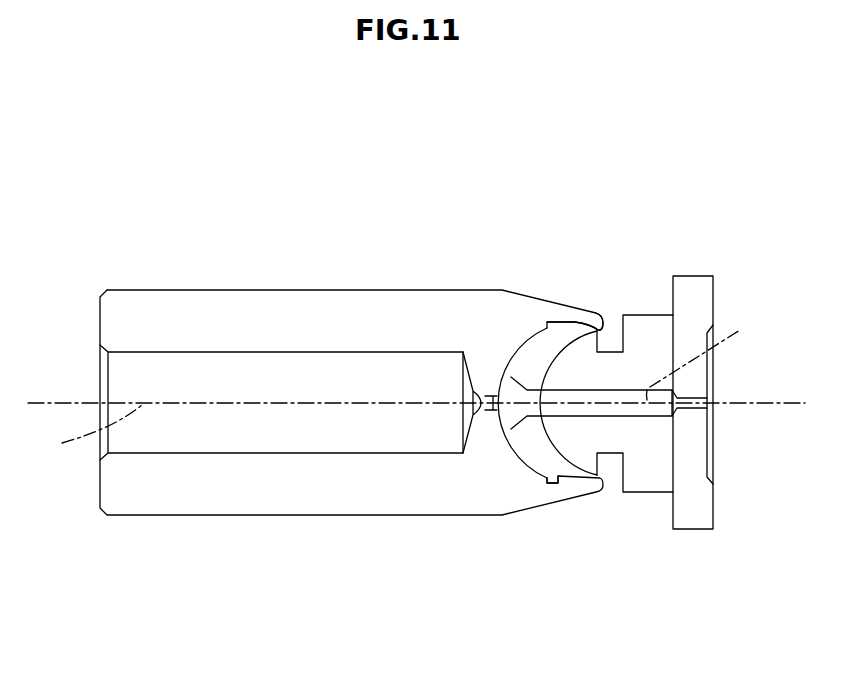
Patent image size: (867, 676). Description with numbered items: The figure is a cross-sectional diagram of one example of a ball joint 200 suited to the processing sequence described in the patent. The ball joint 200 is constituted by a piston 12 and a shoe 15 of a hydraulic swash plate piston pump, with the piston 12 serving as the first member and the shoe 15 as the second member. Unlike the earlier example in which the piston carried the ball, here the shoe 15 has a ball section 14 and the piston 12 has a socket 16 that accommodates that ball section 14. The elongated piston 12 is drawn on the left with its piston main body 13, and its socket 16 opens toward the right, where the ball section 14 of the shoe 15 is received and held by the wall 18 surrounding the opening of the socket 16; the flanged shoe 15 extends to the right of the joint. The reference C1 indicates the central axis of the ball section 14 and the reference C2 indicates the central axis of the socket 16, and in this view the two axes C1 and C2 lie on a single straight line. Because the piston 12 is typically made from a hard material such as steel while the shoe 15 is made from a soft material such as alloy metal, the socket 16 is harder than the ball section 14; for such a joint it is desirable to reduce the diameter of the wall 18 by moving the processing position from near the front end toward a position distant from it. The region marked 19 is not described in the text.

The ball joint 200 is at (194, 97).
The piston 12 is at (253, 288).
The piston main body 13 is at (680, 528).
The ball section 14 is at (557, 480).
The shoe 15 is at (693, 276).
The socket 16 is at (548, 505).
The wall surrounding opening of socket 18 is at (577, 317).
The upper arm groove 19 is at (522, 316).
The central axis of ball section C1 is at (707, 346).
The central axis of socket C2 is at (91, 446).